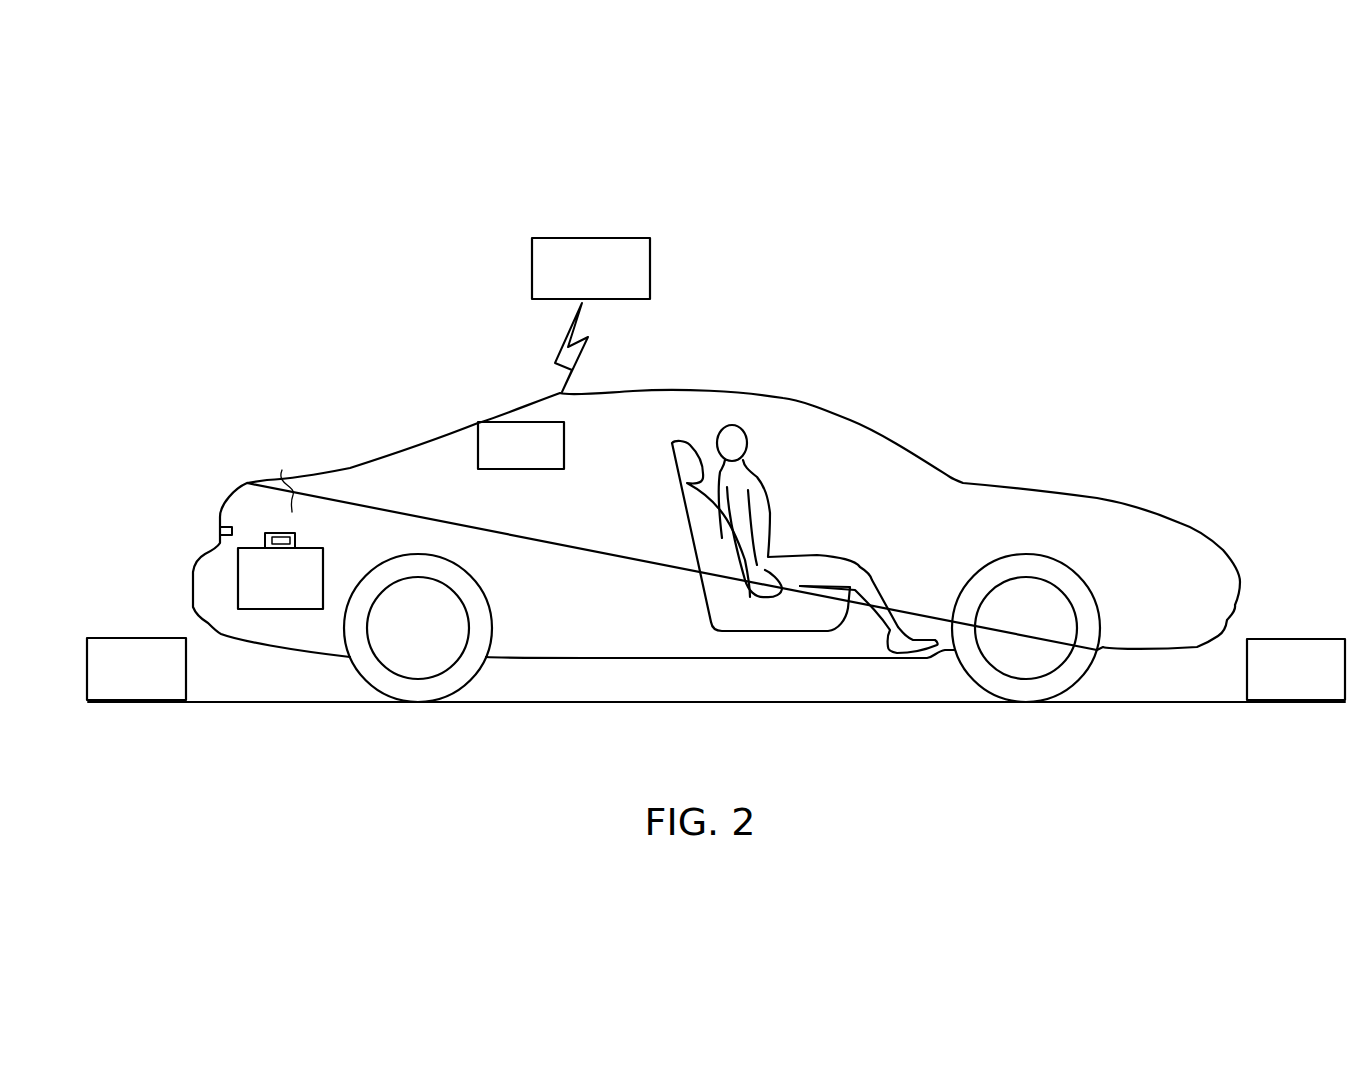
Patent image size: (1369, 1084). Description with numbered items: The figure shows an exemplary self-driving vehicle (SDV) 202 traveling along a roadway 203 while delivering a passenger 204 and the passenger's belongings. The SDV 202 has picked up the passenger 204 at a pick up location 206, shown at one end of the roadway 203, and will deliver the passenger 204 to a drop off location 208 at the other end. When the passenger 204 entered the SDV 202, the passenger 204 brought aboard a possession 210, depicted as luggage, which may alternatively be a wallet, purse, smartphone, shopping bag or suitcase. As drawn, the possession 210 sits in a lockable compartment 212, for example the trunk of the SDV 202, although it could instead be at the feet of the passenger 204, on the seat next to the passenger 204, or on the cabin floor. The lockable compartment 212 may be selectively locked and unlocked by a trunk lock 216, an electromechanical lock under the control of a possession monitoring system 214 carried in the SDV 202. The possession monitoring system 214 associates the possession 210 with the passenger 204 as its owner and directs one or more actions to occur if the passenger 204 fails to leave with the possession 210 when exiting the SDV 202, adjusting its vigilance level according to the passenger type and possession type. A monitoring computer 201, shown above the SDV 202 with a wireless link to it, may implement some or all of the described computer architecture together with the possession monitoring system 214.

The monitoring computer 201 is at (585, 238).
The self-driving vehicle (SDV) 202 is at (1024, 350).
The roadway 203 is at (678, 703).
The passenger 204 is at (770, 513).
The pick up location 206 is at (138, 638).
The drop off location 208 is at (1302, 639).
The possession 210 is at (327, 553).
The lockable compartment 212 is at (282, 478).
The possession monitoring system 214 is at (502, 459).
The trunk lock 216 is at (220, 523).